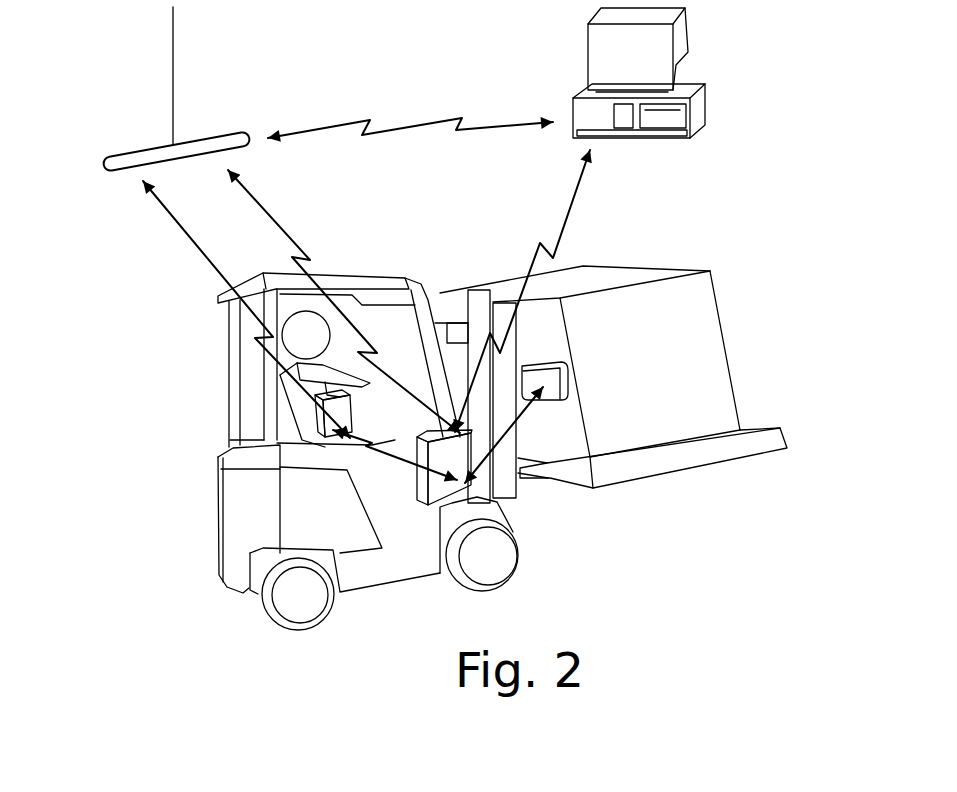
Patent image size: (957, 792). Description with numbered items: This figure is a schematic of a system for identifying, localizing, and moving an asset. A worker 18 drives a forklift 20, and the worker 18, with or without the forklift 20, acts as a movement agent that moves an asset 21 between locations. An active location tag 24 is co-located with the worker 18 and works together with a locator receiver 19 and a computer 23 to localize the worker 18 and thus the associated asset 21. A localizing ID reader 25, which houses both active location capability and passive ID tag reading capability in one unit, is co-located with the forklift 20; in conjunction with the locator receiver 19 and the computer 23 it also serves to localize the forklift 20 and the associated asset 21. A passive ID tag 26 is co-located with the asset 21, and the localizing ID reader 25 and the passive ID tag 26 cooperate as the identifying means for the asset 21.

The worker 18 is at (330, 315).
The locator receiver 19 is at (157, 152).
The forklift 20 is at (218, 537).
The asset 21 is at (712, 270).
The computer 23 is at (704, 97).
The active location tag 24 is at (316, 412).
The localizing ID reader (LIDR) 25 is at (492, 498).
The passive ID tag 26 is at (560, 380).